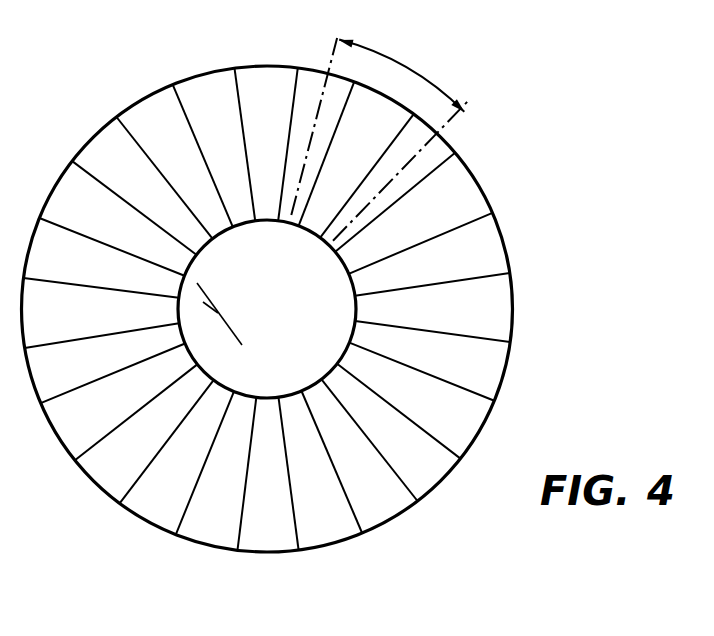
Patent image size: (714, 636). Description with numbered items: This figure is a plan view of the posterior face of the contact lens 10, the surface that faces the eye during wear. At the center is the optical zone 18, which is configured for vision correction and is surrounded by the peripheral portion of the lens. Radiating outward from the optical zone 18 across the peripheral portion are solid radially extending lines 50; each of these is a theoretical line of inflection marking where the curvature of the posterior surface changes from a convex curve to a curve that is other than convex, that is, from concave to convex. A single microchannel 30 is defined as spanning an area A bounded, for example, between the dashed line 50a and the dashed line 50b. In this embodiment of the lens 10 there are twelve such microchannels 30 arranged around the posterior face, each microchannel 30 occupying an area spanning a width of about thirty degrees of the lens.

The contact lens 10 is at (339, 281).
The optical zone 18 is at (266, 355).
The microchannel 30 is at (375, 125).
The lines 50 is at (457, 278).
The dashed line 50a is at (312, 119).
The dashed line 50b is at (397, 177).
The area A is at (401, 70).